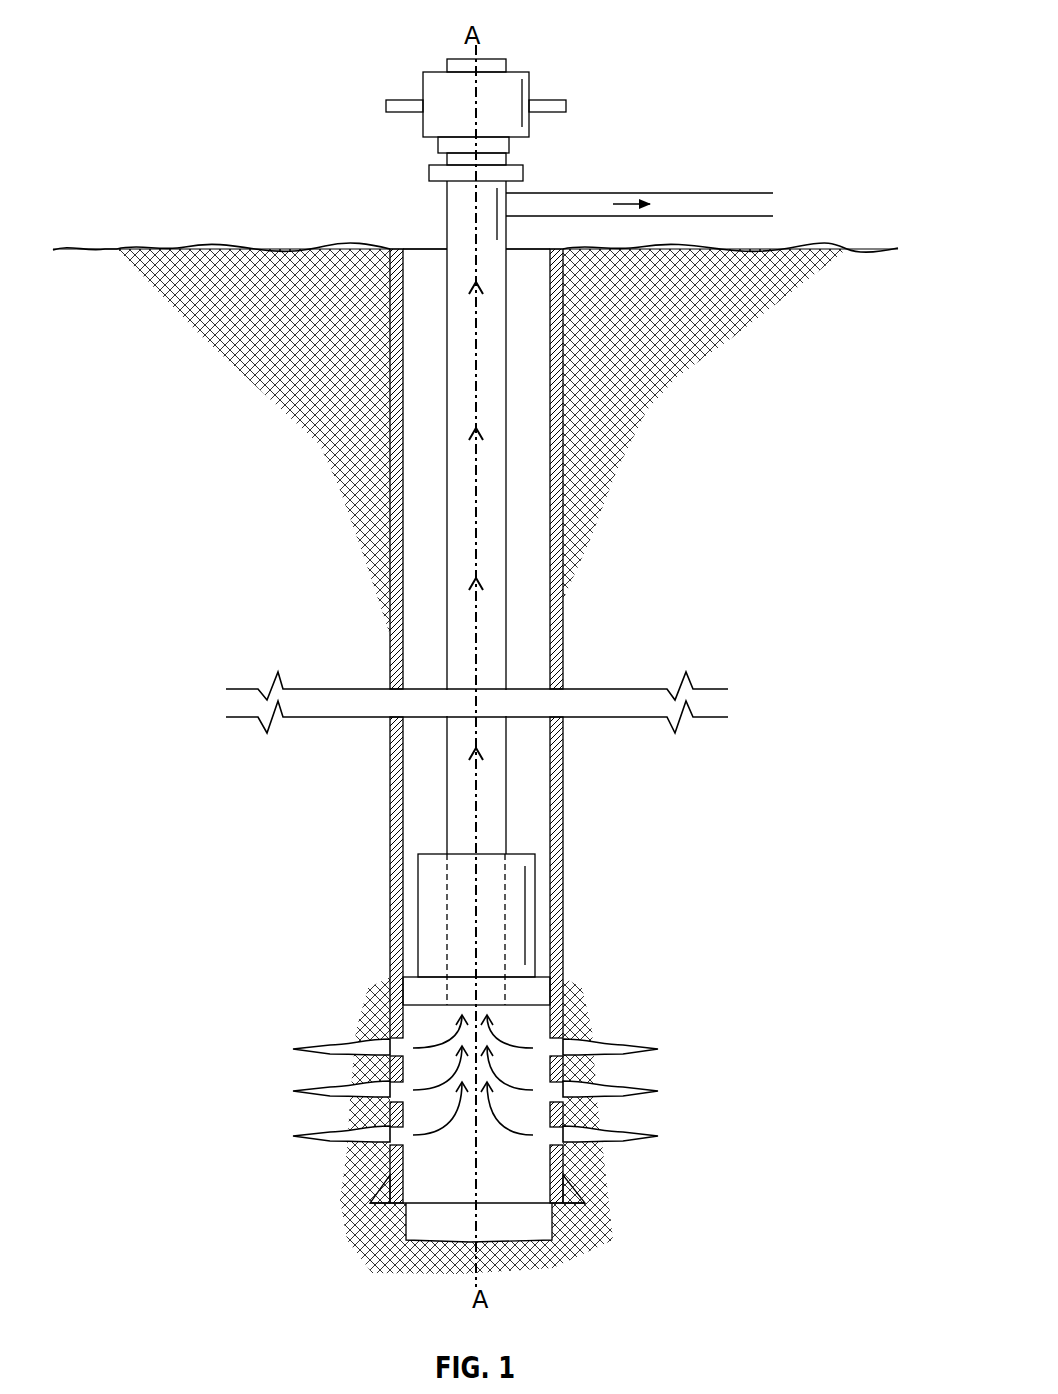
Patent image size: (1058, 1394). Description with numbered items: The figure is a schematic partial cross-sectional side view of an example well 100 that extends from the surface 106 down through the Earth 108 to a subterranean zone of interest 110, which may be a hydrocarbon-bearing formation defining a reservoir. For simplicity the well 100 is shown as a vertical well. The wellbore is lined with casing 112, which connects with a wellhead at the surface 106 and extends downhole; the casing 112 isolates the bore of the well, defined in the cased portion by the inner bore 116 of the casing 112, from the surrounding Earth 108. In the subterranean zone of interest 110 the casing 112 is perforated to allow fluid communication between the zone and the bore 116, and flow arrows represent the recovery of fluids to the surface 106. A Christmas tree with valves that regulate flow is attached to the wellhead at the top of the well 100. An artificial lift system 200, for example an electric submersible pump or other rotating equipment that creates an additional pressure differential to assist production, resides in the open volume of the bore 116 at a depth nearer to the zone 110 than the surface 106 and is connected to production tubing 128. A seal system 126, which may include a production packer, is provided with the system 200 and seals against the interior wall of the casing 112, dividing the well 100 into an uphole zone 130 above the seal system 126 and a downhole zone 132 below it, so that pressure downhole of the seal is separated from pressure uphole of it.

The well 100 is at (712, 79).
The surface 106 is at (113, 248).
The Earth 108 is at (275, 426).
The subterranean zone of interest 110 is at (720, 1003).
The casing 112 is at (563, 642).
The inner bore of the casing 116 is at (540, 571).
The seal system 126 is at (542, 989).
The production tubing 128 is at (447, 653).
The uphole zone 130 is at (543, 825).
The downhole zone 132 is at (415, 1023).
The artificial lift system 200 is at (427, 888).